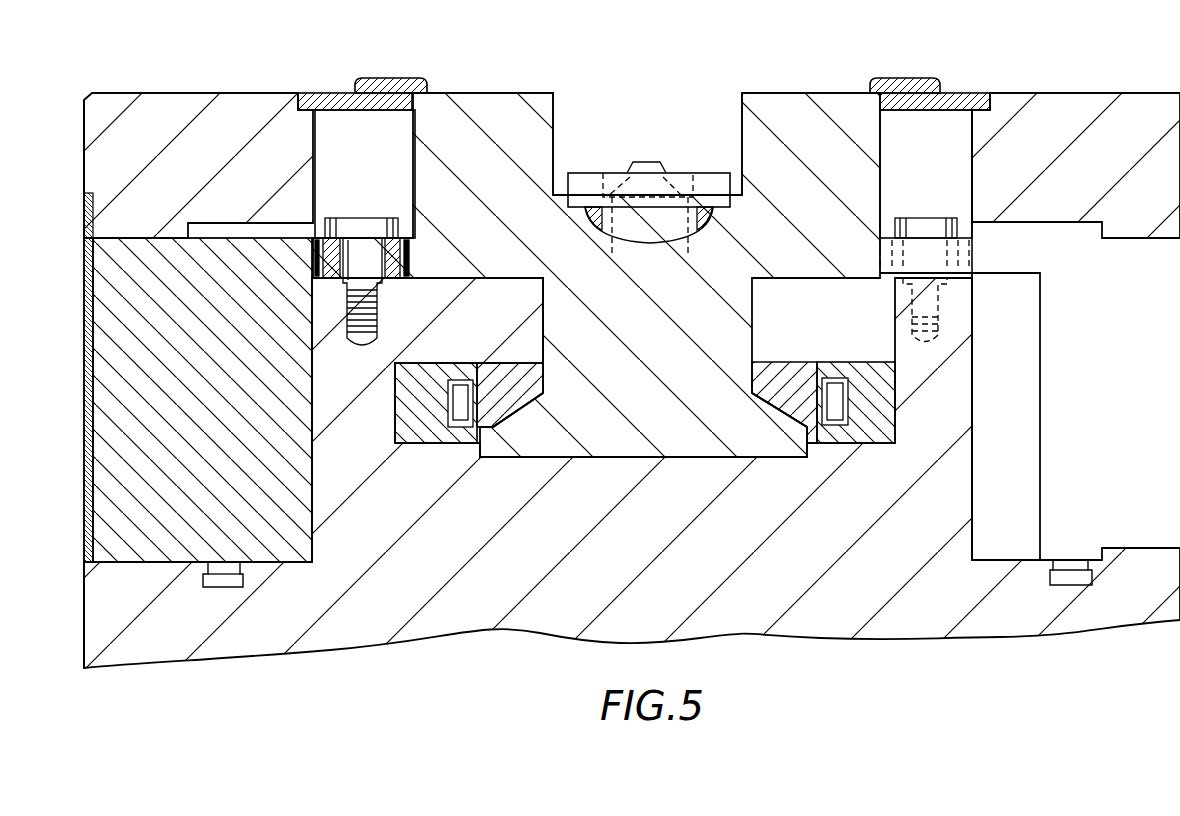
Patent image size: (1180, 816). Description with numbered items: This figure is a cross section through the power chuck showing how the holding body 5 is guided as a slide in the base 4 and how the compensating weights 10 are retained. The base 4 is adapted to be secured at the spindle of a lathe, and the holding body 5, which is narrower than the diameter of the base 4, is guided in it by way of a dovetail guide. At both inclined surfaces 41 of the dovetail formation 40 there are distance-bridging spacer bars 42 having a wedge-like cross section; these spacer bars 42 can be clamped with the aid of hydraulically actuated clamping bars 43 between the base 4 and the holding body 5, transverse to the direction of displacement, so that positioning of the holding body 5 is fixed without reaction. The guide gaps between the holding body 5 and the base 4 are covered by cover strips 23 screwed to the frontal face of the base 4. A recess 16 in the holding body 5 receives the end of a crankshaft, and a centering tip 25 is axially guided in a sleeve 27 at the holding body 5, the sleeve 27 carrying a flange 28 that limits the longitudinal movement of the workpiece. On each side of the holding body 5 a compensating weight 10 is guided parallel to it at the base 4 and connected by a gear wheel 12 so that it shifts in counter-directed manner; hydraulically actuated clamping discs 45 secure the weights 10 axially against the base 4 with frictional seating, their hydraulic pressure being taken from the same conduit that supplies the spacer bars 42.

The base 4 is at (200, 164).
The holding body 5 is at (489, 172).
The compensating weight 10 is at (228, 415).
The gear wheel 12 is at (390, 280).
The recess 16 is at (684, 105).
The cover strip 23 is at (385, 88).
The centering tip 25 is at (640, 168).
The sleeve 27 is at (608, 243).
The flange 28 is at (712, 190).
The dovetail formation 40 is at (682, 425).
The inclined surface 41 is at (520, 410).
The spacer bar 42 is at (505, 375).
The clamping bar 43 is at (407, 407).
The clamping disc 45 is at (222, 587).